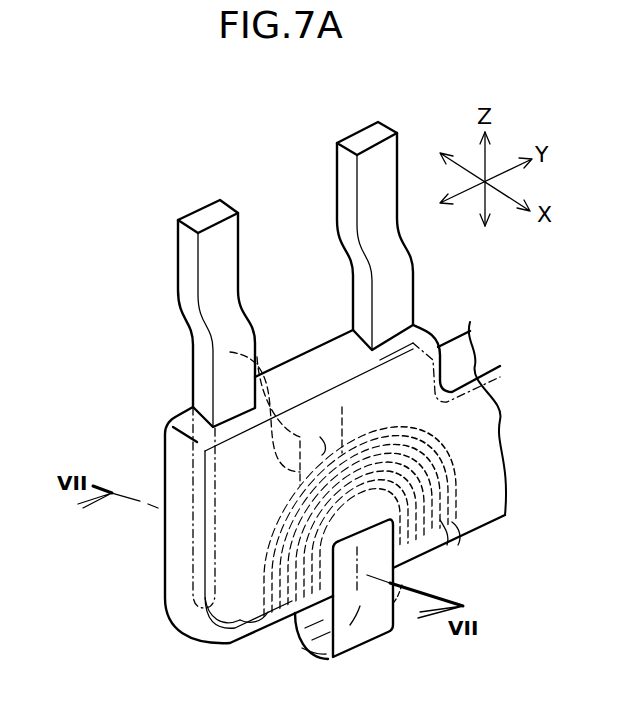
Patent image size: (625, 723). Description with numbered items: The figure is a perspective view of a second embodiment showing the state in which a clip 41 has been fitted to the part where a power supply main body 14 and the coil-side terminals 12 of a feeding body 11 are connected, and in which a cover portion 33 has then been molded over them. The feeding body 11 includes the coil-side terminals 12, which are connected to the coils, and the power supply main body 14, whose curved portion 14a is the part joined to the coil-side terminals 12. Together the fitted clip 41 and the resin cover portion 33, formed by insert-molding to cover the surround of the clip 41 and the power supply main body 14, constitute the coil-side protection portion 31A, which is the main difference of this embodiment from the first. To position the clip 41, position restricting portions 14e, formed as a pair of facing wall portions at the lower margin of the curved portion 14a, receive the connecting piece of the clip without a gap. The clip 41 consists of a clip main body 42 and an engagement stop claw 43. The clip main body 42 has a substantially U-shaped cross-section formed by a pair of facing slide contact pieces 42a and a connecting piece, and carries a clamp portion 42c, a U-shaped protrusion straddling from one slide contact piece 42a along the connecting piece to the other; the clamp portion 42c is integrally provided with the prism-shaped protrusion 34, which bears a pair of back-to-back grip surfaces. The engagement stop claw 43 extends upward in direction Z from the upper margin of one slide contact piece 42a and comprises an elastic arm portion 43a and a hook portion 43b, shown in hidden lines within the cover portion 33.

The feeding body 11 is at (253, 268).
The coil-side terminal 12 is at (358, 138).
The power supply main body 14 is at (469, 395).
The curved portion 14a is at (468, 370).
The position restricting portion 14e is at (200, 632).
The coil-side protection portion 31A is at (282, 486).
The cover portion 33 is at (165, 543).
The protrusion 34 is at (377, 638).
The clip 41 is at (447, 453).
The clip main body 42 is at (458, 477).
The slide contact piece 42a is at (420, 545).
The clamp portion 42c is at (353, 633).
The engagement stop claw 43 is at (200, 409).
The elastic arm portion 43a is at (203, 398).
The hook portion 43b is at (198, 356).